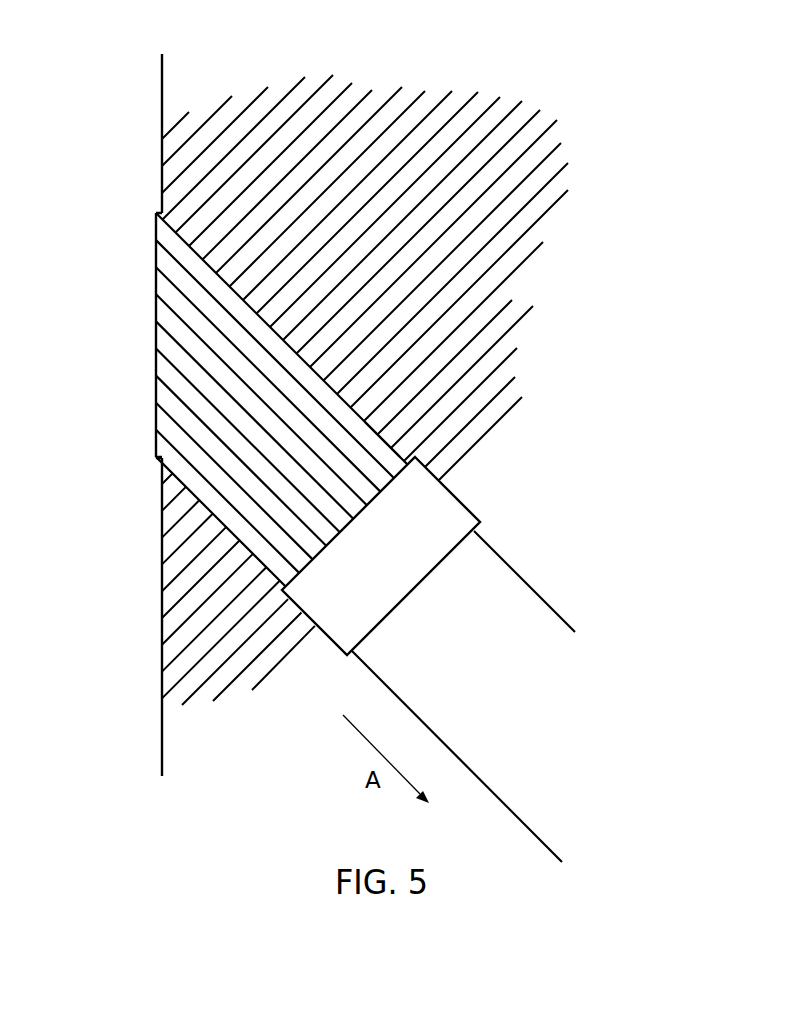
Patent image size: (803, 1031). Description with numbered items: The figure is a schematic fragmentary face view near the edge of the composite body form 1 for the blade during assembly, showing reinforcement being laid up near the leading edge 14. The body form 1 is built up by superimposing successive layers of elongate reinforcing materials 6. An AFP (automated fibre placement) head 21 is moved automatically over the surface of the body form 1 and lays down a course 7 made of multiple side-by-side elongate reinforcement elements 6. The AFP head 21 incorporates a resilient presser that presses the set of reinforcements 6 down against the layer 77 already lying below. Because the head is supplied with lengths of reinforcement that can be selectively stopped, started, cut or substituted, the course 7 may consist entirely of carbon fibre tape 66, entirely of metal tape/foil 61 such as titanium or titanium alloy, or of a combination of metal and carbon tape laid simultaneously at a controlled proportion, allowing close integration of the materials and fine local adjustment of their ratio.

The body form 1 is at (148, 122).
The layer 77 is at (458, 127).
The course 7 is at (128, 217).
The metal tape/foil 61 is at (248, 480).
The carbon fibre tape 66 is at (290, 495).
The leading edge 14 is at (142, 463).
The elongate reinforcement elements 6 is at (362, 433).
The AFP head 21 is at (442, 513).